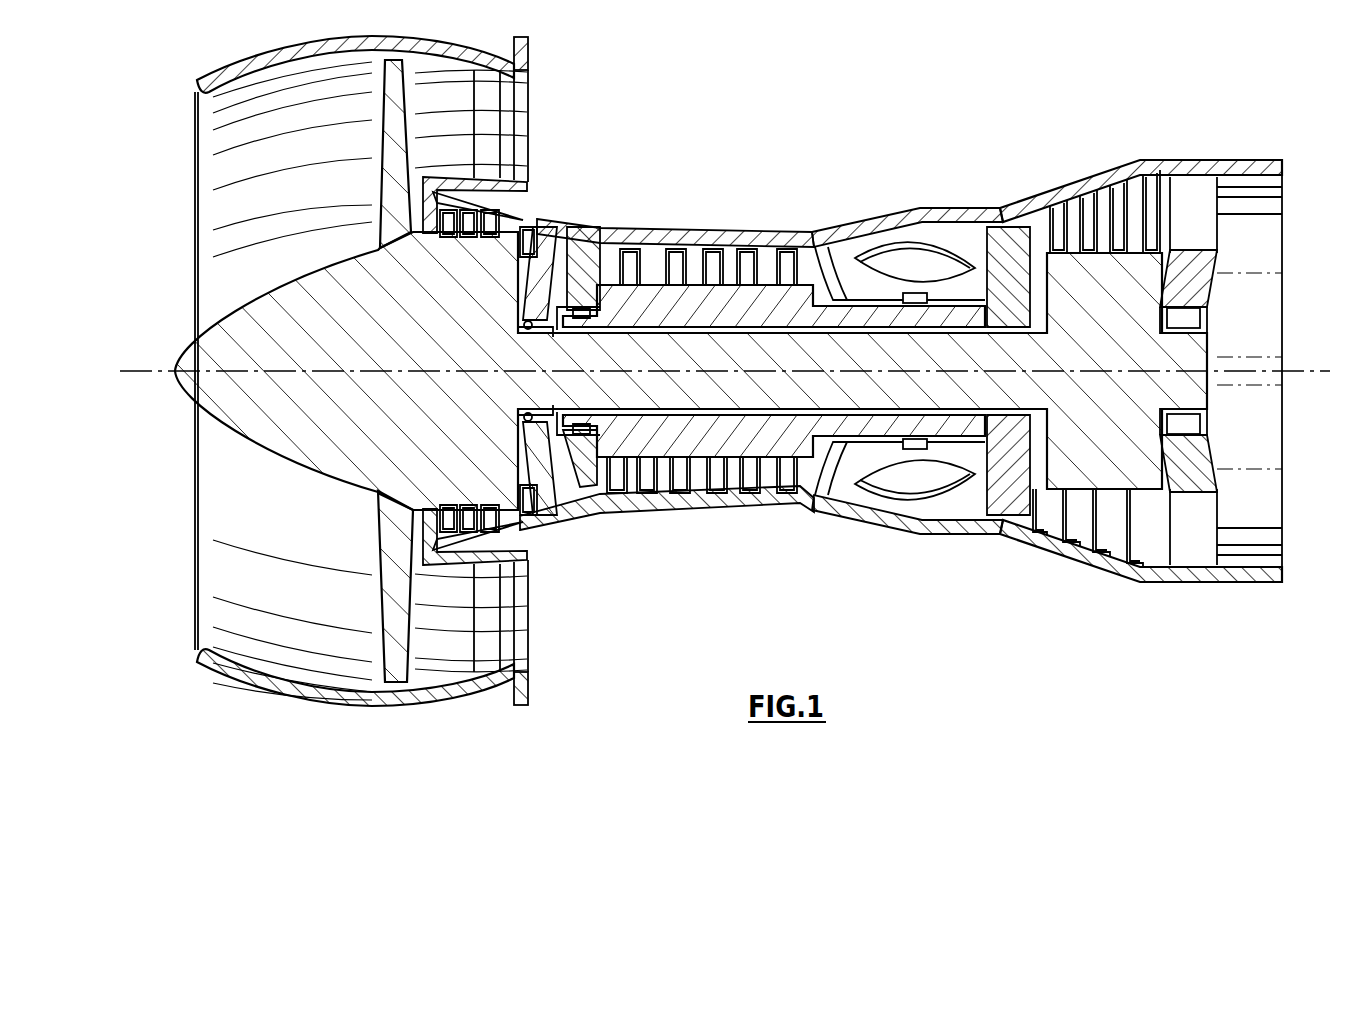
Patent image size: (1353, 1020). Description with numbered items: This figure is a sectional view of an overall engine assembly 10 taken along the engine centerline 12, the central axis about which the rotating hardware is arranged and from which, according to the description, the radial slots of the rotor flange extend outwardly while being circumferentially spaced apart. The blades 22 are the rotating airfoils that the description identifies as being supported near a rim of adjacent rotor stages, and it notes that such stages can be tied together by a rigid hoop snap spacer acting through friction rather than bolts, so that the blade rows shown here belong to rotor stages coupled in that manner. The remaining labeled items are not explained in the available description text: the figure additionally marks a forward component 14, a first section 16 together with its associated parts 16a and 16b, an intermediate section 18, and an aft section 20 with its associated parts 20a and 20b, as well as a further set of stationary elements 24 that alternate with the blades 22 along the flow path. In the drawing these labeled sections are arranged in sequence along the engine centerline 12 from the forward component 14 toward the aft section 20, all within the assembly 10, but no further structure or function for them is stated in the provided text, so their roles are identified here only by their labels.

The gas turbine engine 10 is at (576, 86).
The engine centerline 12 is at (133, 371).
The fan 14 is at (377, 143).
The compressor section 16 is at (704, 392).
The compressor casing 16a is at (714, 514).
The compressor inner frame 16b is at (452, 570).
The combustor section 18 is at (980, 183).
The turbine section 20 is at (1107, 360).
The turbine inner casing 20a is at (977, 540).
The turbine outer casing 20b is at (1164, 582).
The blades 22 is at (660, 257).
The stationary vanes 24 is at (522, 237).